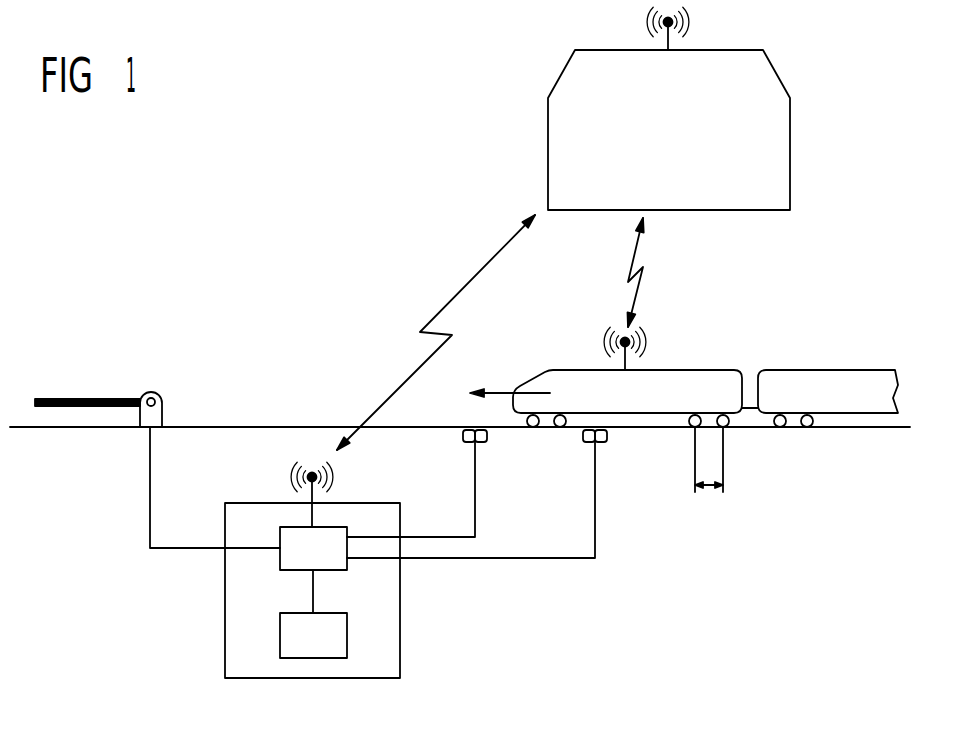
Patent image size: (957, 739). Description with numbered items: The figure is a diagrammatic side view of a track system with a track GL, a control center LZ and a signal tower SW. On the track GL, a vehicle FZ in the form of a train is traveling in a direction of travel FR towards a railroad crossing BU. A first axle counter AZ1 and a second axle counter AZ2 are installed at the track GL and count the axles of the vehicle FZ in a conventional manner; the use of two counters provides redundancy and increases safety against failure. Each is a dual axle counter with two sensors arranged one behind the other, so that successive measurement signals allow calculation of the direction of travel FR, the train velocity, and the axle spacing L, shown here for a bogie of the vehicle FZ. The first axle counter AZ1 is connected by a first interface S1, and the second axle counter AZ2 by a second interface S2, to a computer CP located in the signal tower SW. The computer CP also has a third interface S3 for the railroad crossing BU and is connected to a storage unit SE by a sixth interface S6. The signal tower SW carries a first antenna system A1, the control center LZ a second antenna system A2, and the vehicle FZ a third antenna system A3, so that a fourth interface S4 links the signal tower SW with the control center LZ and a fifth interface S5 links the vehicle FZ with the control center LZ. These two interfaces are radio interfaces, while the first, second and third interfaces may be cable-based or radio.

The control center LZ is at (790, 155).
The second antenna system A2 is at (664, 48).
The first antenna system A1 is at (310, 503).
The third antenna system A3 is at (620, 369).
The fourth interface S4 is at (469, 282).
The fifth interface S5 is at (642, 283).
The vehicle FZ is at (700, 370).
The direction of travel FR is at (510, 393).
The axle spacing L is at (709, 476).
The railroad crossing BU is at (100, 388).
The track GL is at (58, 428).
The third interface S3 is at (150, 497).
The first axle counter AZ1 is at (478, 442).
The second axle counter AZ2 is at (598, 442).
The first interface S1 is at (475, 495).
The second interface S2 is at (595, 495).
The signal tower SW is at (400, 600).
The computer CP is at (280, 555).
The sixth interface S6 is at (313, 596).
The storage unit SE is at (280, 658).